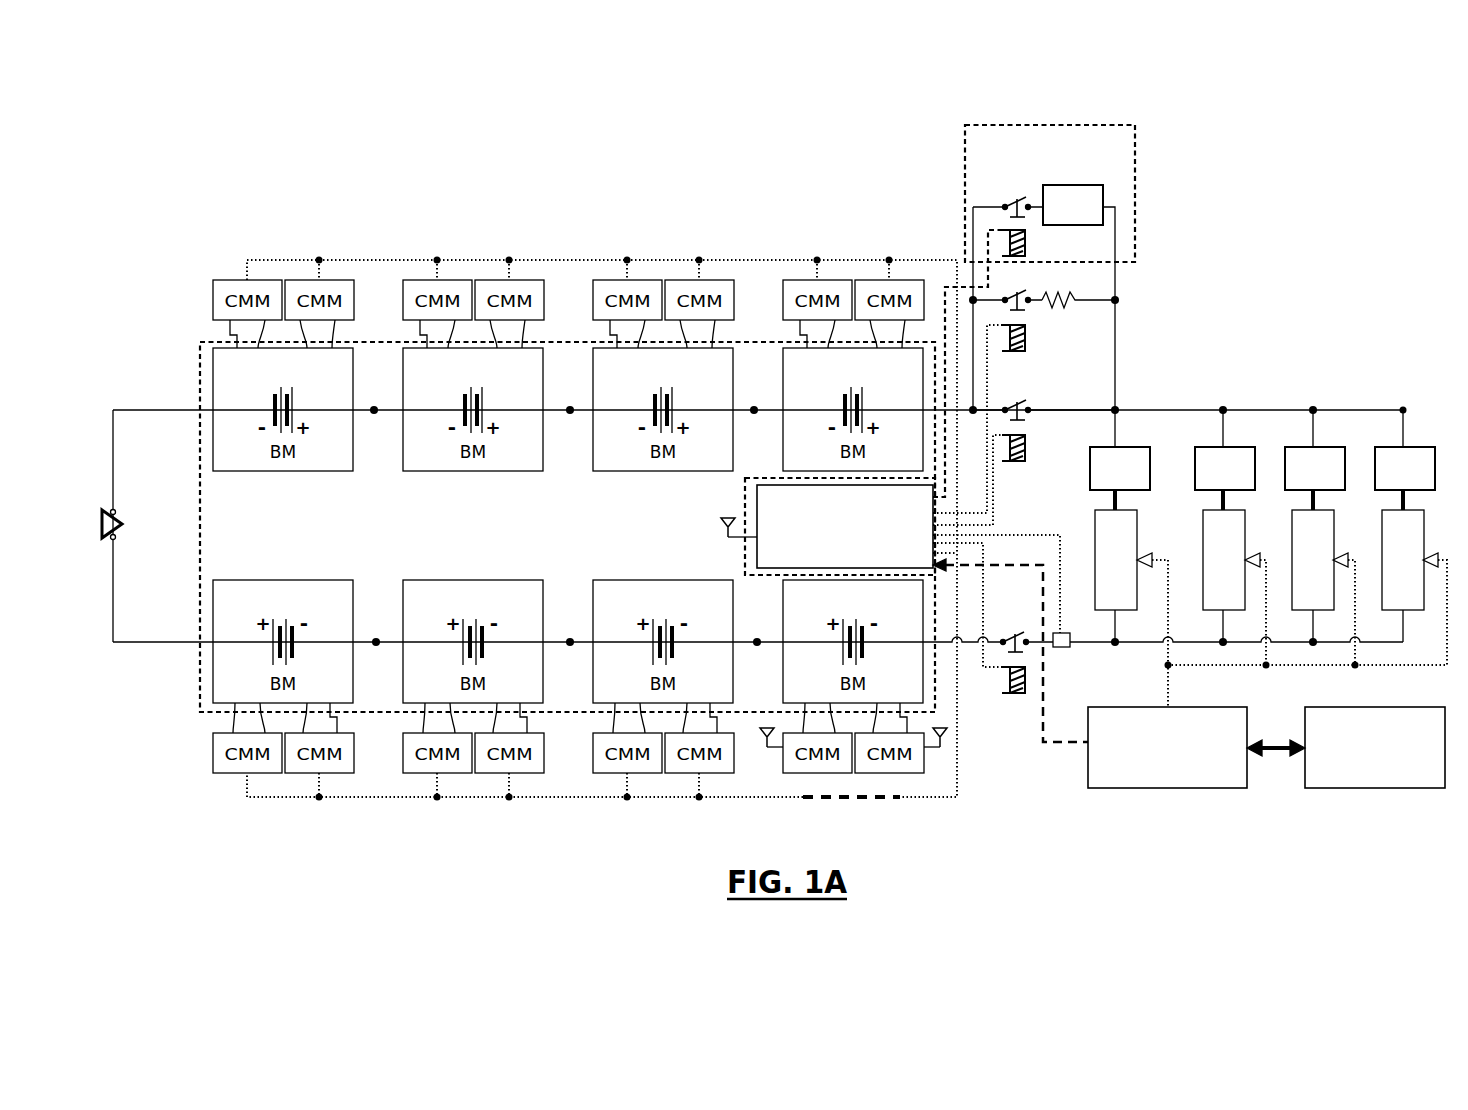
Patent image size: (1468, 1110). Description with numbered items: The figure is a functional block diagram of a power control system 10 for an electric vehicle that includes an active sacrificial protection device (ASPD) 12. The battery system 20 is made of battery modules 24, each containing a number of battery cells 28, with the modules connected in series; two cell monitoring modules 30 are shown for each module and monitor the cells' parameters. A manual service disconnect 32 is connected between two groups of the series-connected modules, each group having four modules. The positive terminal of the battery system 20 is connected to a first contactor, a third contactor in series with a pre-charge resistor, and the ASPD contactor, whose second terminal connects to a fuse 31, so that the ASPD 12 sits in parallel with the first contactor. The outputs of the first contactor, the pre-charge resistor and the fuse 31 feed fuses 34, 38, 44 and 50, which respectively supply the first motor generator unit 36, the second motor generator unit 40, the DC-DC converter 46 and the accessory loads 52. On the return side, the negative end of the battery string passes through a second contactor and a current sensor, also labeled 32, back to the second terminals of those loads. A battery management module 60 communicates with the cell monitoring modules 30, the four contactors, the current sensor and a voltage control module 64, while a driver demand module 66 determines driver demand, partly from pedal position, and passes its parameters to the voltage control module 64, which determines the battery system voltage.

The power control system 10 is at (228, 188).
The active sacrificial protection device 12 is at (1135, 197).
The battery system 20 is at (200, 342).
The battery module 24 is at (213, 378).
The battery cell 28 is at (547, 510).
The cell monitoring module 30 is at (213, 295).
The fuse 31 is at (1082, 185).
The manual service disconnect 32 is at (253, 520).
The fuse 34 is at (1090, 452).
The first motor generator unit 36 is at (1095, 535).
The fuse 38 is at (1197, 458).
The second motor generator unit 40 is at (1203, 535).
The fuse 44 is at (1287, 455).
The DC-DC converter 46 is at (1292, 535).
The fuse 50 is at (1377, 455).
The accessory loads 52 is at (1382, 535).
The battery management module 60 is at (757, 518).
The voltage control module 64 is at (1150, 788).
The driver demand module 66 is at (1350, 788).